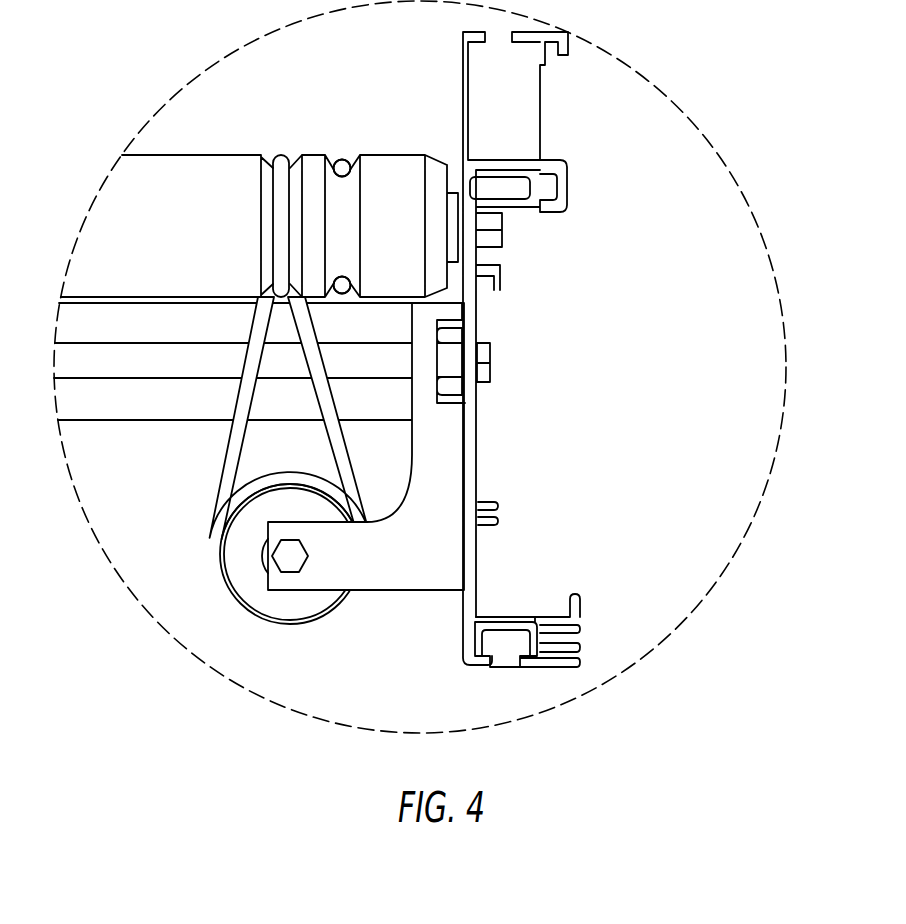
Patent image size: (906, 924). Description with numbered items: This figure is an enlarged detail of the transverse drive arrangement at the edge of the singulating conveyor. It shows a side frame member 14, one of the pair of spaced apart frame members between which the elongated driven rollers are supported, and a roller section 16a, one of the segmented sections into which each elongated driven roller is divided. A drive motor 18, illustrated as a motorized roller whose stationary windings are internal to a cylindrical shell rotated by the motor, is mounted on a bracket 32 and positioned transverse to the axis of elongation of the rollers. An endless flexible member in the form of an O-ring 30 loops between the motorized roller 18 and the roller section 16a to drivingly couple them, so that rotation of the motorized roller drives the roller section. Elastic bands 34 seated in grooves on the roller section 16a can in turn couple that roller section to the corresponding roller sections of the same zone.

The side frame member 14 is at (477, 475).
The roller section 16a is at (176, 173).
The drive motor 18 is at (285, 613).
The O-ring 30 is at (215, 472).
The bracket 32 is at (387, 593).
The elastic band 34 is at (344, 160).